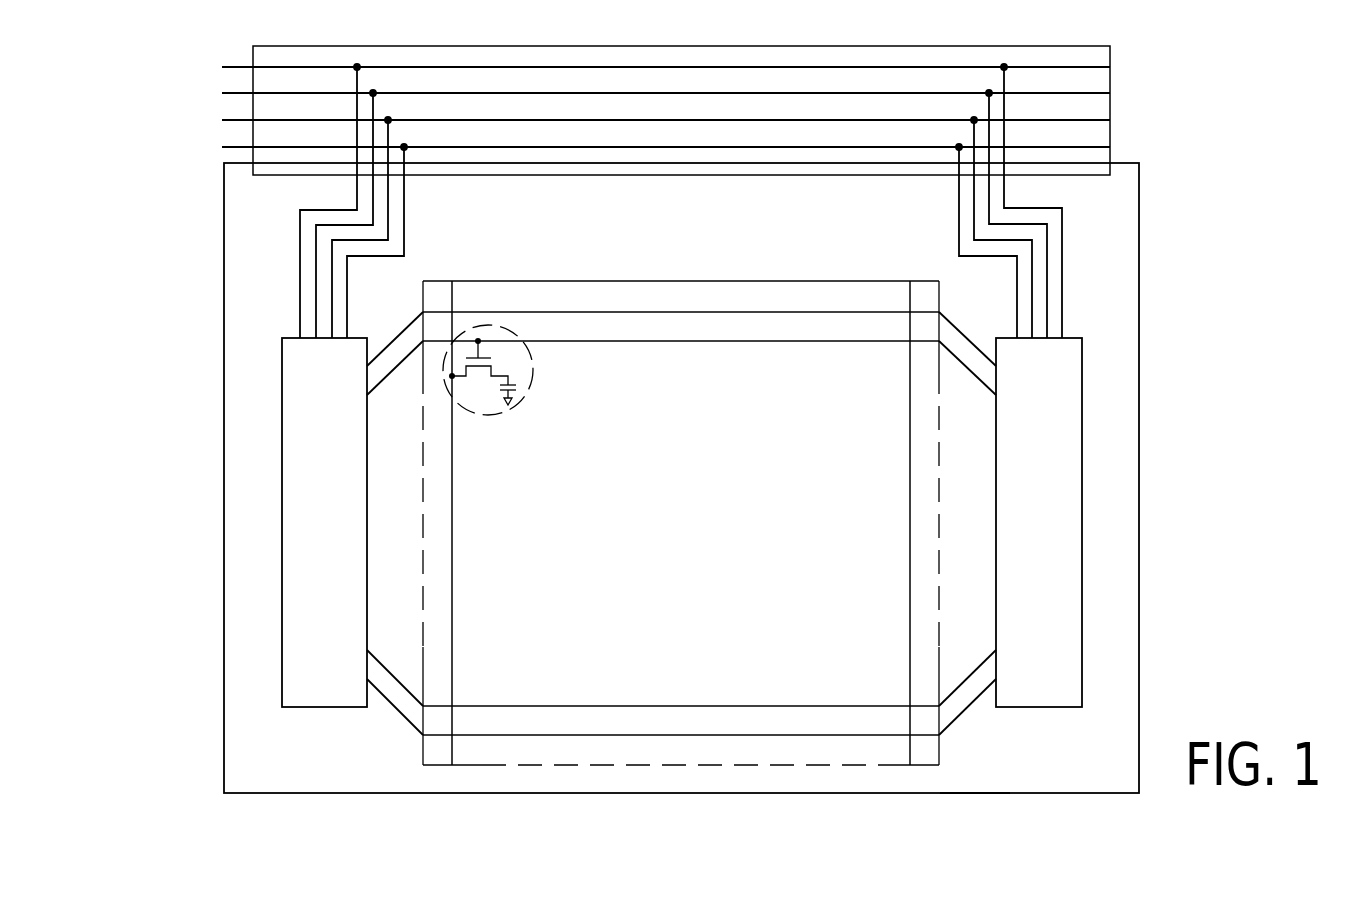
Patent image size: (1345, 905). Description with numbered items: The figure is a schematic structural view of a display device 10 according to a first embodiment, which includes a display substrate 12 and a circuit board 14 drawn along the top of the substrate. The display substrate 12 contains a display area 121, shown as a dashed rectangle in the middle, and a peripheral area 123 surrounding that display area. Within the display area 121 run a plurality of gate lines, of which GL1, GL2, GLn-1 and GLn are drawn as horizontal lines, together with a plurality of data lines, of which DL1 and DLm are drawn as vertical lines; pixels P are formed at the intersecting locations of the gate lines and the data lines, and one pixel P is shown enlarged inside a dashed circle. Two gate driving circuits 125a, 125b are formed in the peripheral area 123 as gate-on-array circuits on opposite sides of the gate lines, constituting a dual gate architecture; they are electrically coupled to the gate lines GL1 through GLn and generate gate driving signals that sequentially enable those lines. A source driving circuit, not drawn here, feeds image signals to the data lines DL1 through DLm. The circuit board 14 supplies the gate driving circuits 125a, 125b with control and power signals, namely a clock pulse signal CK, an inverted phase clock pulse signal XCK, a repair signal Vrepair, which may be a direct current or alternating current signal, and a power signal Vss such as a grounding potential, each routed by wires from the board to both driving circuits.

The display device 10 is at (1257, 192).
The display substrate 12 is at (1139, 340).
The circuit board 14 is at (1110, 80).
The display area 121 is at (538, 753).
The peripheral area 123 is at (975, 780).
The gate driving circuit 125a is at (282, 507).
The gate driving circuit 125b is at (1082, 505).
The pixel P is at (512, 410).
The gate line GL1 is at (701, 312).
The gate line GL2 is at (808, 341).
The gate line GLn-1 is at (808, 706).
The gate line GLn is at (700, 737).
The data line DL1 is at (452, 547).
The data line DLm is at (910, 547).
The repair signal Vrepair is at (620, 63).
The power signal Vss is at (644, 89).
The clock pulse signal XCK is at (644, 116).
The clock pulse signal CK is at (650, 143).